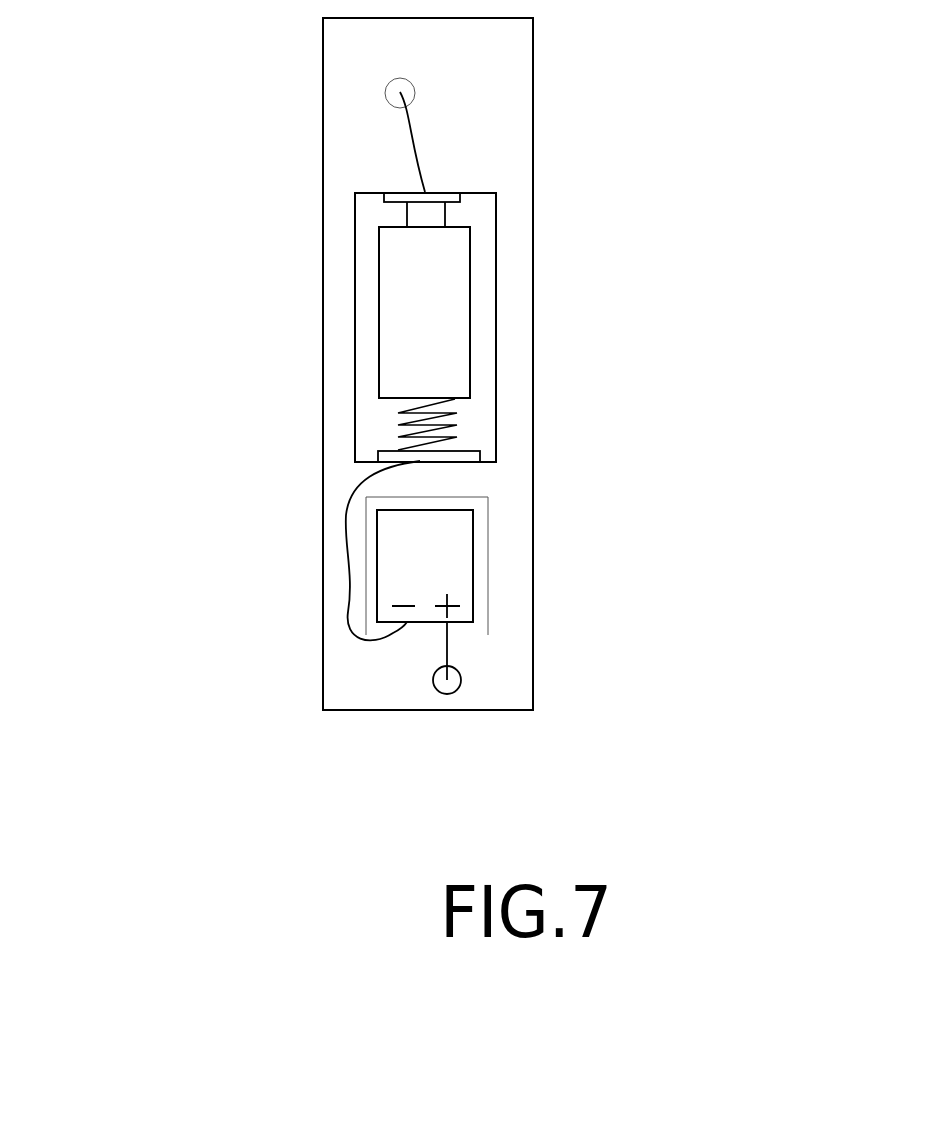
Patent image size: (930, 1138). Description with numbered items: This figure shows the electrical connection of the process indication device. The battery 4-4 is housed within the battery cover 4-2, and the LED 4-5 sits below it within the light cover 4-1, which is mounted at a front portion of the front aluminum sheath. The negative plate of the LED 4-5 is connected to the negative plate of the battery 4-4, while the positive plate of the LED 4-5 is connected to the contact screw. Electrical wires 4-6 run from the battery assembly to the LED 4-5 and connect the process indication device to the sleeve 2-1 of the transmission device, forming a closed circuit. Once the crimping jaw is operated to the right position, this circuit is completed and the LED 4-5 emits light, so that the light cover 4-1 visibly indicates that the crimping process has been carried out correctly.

The sleeve 2-1 is at (513, 400).
The battery cover 4-2 is at (481, 213).
The battery 4-4 is at (442, 316).
The LED 4-5 is at (453, 540).
The light cover 4-1 is at (483, 615).
The electrical wires 4-6 is at (347, 533).